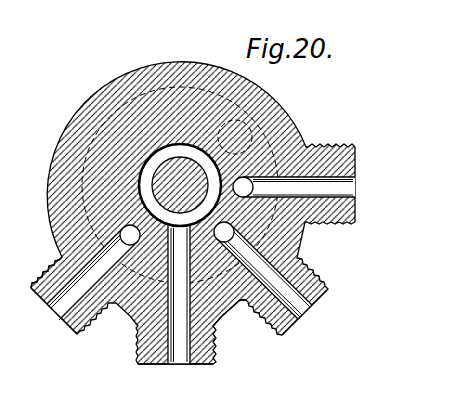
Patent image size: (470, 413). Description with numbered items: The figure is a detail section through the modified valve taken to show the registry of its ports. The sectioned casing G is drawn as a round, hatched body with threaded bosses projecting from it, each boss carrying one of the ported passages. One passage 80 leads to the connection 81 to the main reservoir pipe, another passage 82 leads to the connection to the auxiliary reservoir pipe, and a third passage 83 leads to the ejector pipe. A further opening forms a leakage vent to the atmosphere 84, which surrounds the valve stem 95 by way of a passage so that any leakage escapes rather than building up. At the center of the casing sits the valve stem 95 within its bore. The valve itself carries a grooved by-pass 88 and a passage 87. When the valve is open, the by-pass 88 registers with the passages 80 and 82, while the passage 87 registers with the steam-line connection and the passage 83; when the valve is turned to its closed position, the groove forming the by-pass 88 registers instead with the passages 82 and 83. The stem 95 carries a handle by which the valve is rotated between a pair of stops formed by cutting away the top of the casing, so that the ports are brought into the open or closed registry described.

The valve casing body G is at (193, 213).
The passage 80 is at (63, 272).
The connection 81 is at (48, 308).
The passage 82 is at (316, 312).
The passage 83 is at (335, 186).
The leakage vent 84 is at (143, 365).
The passage 87 is at (268, 108).
The grooved by-pass 88 is at (233, 317).
The valve stem 95 is at (155, 175).